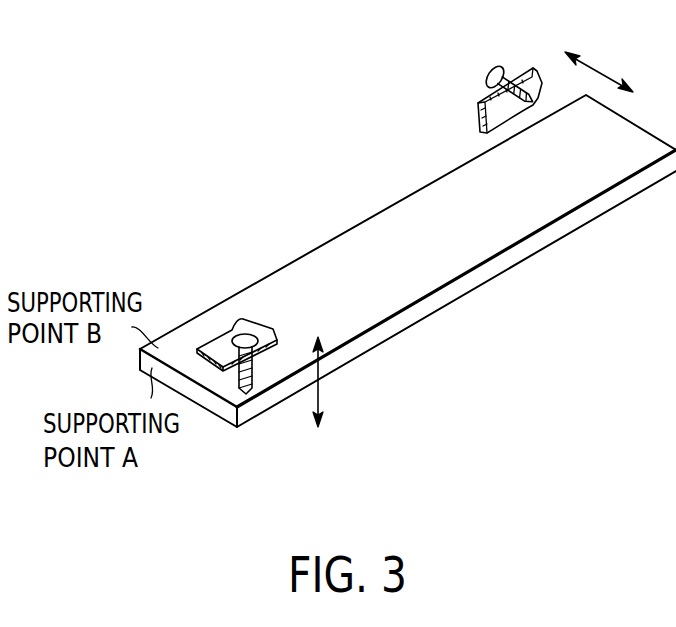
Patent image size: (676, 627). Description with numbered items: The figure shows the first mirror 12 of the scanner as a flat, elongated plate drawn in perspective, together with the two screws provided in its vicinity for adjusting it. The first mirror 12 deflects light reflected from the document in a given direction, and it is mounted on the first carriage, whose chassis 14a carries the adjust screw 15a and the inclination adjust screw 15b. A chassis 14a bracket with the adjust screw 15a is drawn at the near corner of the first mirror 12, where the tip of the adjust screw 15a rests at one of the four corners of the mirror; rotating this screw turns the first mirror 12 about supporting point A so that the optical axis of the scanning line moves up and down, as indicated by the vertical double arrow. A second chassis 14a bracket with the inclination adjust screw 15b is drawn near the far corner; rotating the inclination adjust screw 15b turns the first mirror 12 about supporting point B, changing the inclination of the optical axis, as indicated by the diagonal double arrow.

The first mirror 12 is at (568, 237).
The chassis 14a is at (213, 346).
The adjust screw 15a is at (246, 340).
The inclination adjust screw 15b is at (488, 80).